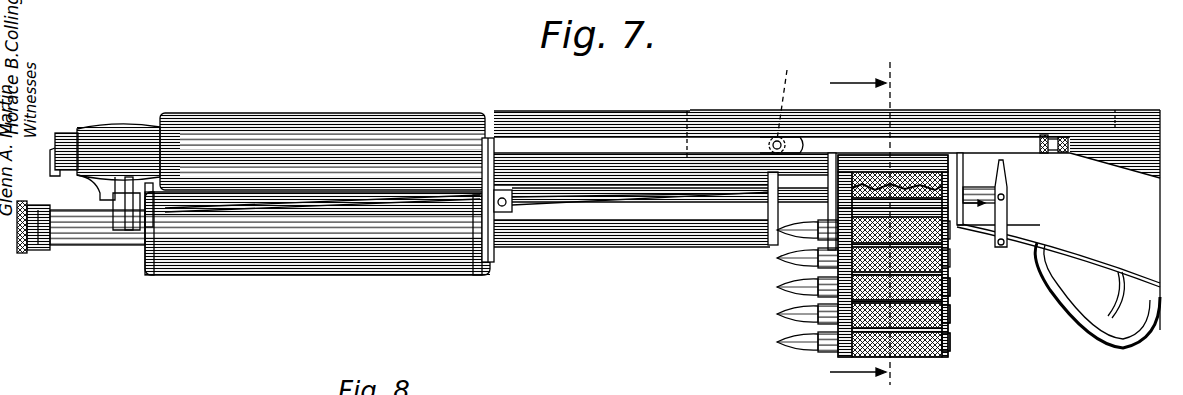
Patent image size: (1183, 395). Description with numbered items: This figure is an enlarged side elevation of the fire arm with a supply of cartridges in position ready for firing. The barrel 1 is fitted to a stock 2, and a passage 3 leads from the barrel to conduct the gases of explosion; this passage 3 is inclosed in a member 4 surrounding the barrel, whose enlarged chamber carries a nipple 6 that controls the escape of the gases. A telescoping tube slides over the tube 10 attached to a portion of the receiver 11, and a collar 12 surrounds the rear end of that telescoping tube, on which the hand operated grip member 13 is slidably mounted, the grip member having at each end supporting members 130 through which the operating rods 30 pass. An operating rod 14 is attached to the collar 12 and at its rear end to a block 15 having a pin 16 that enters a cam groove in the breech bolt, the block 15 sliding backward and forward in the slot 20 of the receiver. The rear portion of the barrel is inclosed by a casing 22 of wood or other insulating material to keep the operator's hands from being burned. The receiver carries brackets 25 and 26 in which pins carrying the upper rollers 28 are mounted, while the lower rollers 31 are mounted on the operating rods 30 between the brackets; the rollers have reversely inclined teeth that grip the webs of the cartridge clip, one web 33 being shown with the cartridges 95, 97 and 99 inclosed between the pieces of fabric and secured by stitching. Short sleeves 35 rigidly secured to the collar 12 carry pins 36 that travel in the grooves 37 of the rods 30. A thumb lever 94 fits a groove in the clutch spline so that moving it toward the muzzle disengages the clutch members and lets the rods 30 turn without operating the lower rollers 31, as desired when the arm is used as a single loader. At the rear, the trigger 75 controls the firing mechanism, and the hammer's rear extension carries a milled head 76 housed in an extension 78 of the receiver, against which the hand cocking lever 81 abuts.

The barrel 1 is at (66, 168).
The stock 2 is at (690, 147).
The passage 3 is at (865, 215).
The member 4 is at (120, 138).
The nipple 6 is at (40, 240).
The tube 10 is at (628, 238).
The receiver 11 is at (715, 122).
The collar 12 is at (486, 258).
The hand operated grip member 13 is at (271, 275).
The operating rod 14 is at (545, 143).
The block 15 is at (782, 92).
The pin 16 is at (786, 138).
The slot 20 is at (987, 133).
The casing 22 is at (308, 122).
The bracket 25 is at (828, 182).
The bracket 26 is at (960, 190).
The upper roller 28 is at (905, 162).
The operating rod 30 is at (277, 204).
The lower roller 31 is at (795, 265).
The web 33 is at (925, 357).
The short sleeve 35 is at (511, 190).
The pin 36 is at (496, 204).
The groove 37 is at (566, 195).
The trigger 75 is at (1118, 296).
The milled head 76 is at (1070, 152).
The extension 78 is at (1115, 110).
The hand cocking lever 81 is at (1054, 153).
The thumb lever 94 is at (1008, 219).
The cartridge 95 is at (952, 341).
The cartridge 97 is at (952, 313).
The cartridge 99 is at (952, 286).
The supporting member 130 is at (147, 272).